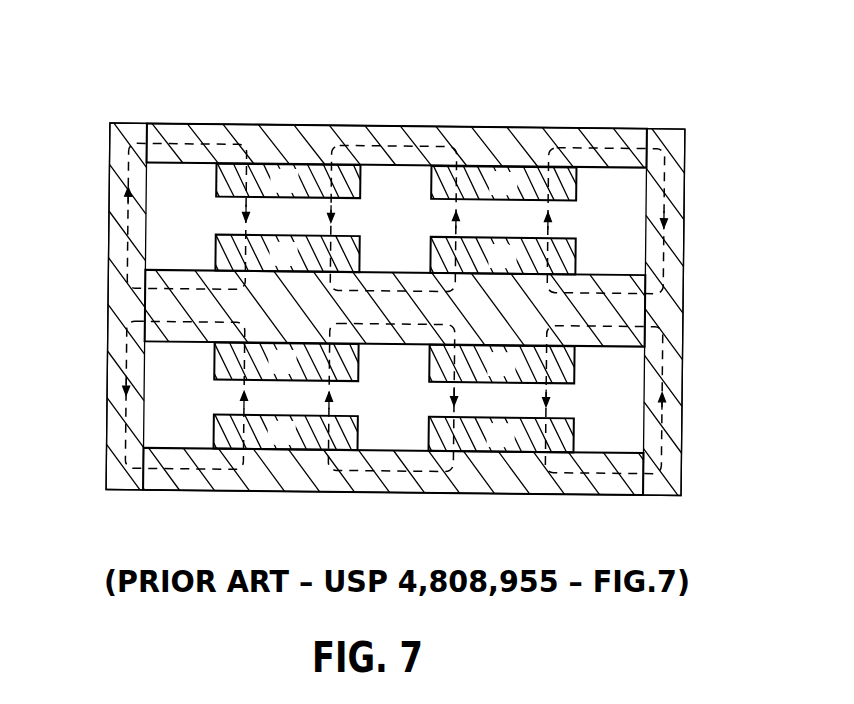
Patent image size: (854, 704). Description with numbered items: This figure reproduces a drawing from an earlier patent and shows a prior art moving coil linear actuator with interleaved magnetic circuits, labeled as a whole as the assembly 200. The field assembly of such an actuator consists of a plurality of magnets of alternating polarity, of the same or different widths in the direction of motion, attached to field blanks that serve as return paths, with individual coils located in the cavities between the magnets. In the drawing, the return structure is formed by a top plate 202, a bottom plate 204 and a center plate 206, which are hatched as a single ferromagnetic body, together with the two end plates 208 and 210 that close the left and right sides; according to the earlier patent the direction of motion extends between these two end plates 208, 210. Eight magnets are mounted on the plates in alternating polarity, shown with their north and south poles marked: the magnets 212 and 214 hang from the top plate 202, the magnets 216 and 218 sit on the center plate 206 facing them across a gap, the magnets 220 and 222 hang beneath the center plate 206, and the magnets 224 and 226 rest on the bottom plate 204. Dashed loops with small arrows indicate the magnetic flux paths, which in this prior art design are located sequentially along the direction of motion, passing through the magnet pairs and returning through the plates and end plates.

The prior art magnetic circuit assembly 200 is at (450, 80).
The top pole plate 202 is at (376, 125).
The bottom pole plate 204 is at (365, 492).
The center pole plate 206 is at (163, 303).
The end plate 208 is at (108, 152).
The end plate 210 is at (684, 140).
The permanent magnet (N) 212 is at (253, 166).
The permanent magnet (S) 214 is at (529, 170).
The permanent magnet (S) 216 is at (216, 243).
The permanent magnet (N) 218 is at (575, 249).
The permanent magnet (S) 220 is at (216, 366).
The permanent magnet (N) 222 is at (575, 382).
The permanent magnet (N) 224 is at (263, 452).
The permanent magnet (S) 226 is at (518, 452).